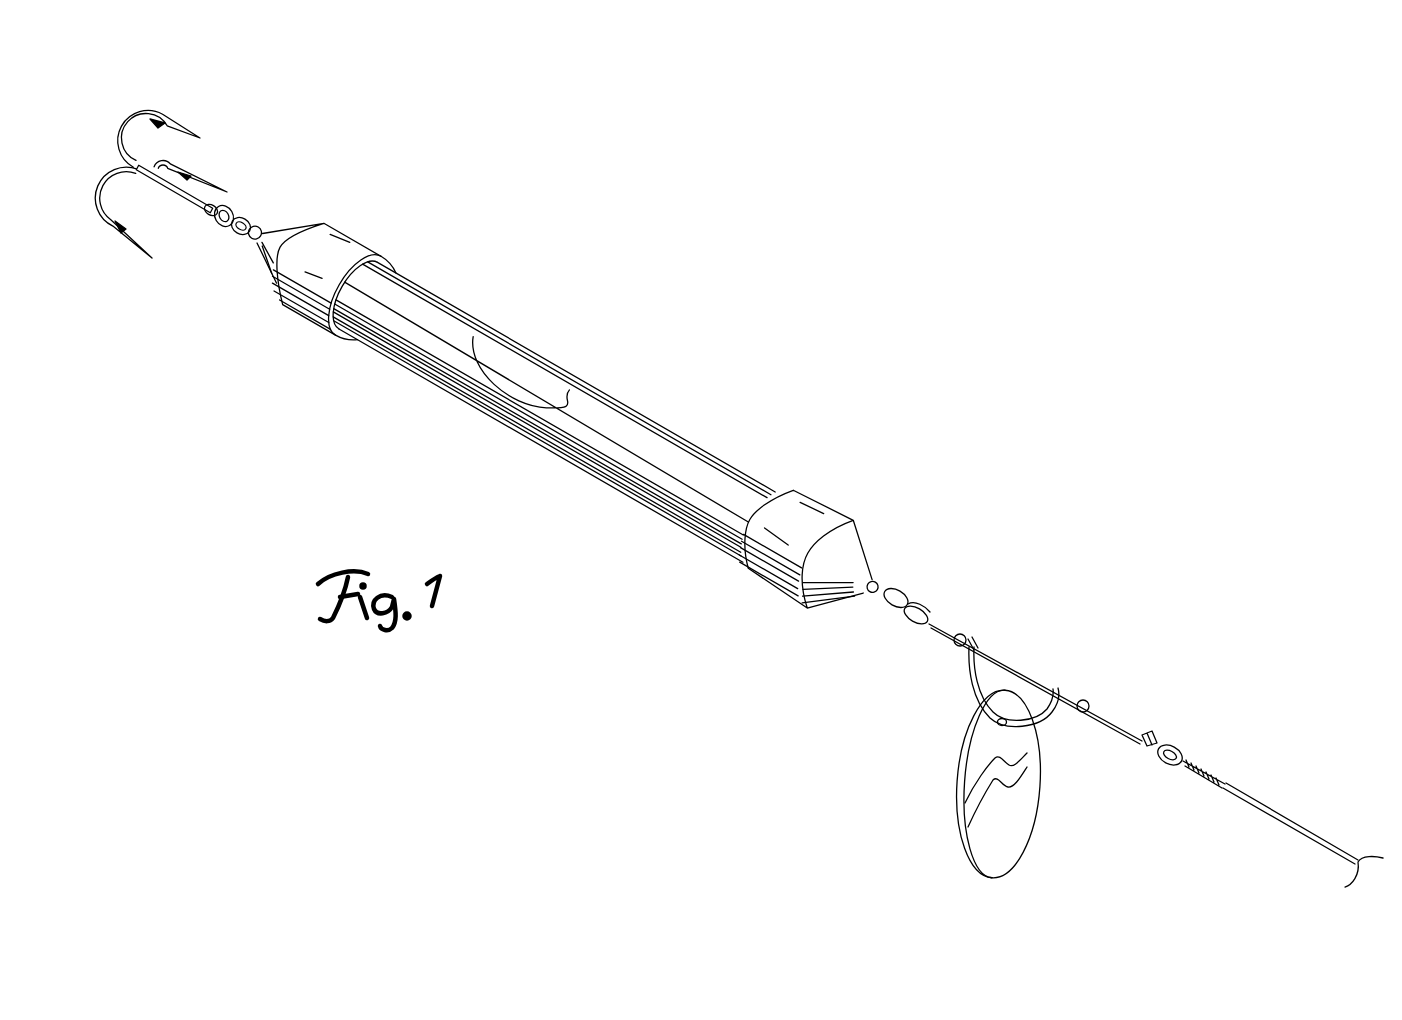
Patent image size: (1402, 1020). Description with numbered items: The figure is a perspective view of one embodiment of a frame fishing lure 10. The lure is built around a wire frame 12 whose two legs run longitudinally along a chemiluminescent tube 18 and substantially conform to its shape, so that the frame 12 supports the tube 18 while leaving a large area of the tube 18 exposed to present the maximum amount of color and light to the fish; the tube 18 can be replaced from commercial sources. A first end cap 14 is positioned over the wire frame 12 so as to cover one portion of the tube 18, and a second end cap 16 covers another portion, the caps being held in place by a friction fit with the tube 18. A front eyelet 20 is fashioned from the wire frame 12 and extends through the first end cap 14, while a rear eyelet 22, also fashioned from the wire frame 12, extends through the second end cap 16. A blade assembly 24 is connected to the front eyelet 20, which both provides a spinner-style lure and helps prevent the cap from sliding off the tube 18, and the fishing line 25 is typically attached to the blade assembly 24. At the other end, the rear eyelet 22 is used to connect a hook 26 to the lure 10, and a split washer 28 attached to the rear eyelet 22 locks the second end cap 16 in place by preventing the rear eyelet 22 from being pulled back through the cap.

The frame fishing lure 10 is at (872, 333).
The wire frame 12 is at (655, 421).
The first end cap 14 is at (840, 508).
The second end cap 16 is at (374, 238).
The chemiluminescent tube 18 is at (432, 350).
The front eyelet 20 is at (915, 603).
The rear eyelet 22 is at (266, 236).
The blade assembly 24 is at (1023, 666).
The fishing line 25 is at (1267, 812).
The hook 26 is at (177, 162).
The split washer 28 is at (240, 215).